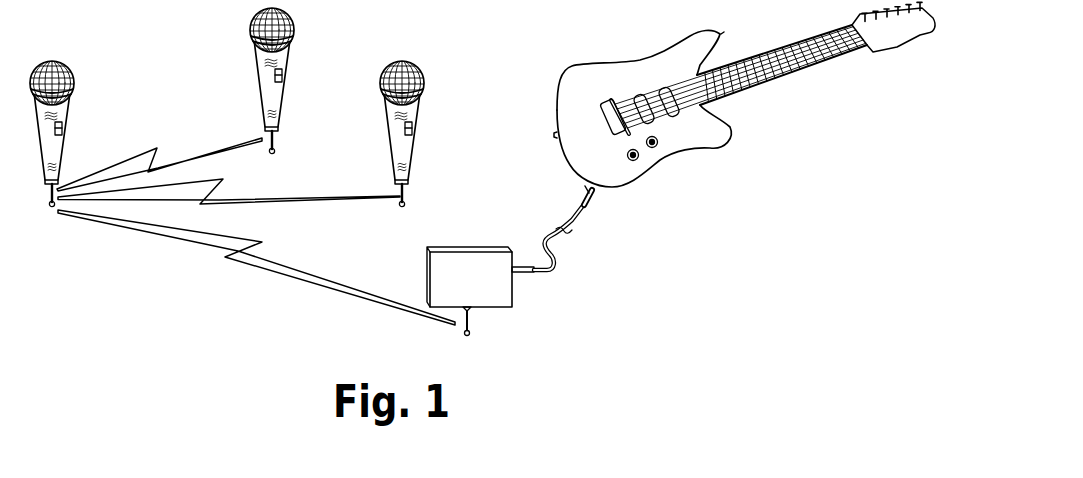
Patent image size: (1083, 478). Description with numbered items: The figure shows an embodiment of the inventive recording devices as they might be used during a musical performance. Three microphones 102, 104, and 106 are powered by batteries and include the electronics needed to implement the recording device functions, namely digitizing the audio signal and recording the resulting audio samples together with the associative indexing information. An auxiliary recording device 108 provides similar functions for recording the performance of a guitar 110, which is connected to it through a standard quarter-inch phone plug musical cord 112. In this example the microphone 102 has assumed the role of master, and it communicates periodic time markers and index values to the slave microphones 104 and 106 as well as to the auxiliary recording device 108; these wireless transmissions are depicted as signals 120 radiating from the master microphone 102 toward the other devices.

The microphone 102 is at (68, 137).
The microphone 104 is at (252, 78).
The microphone 106 is at (385, 152).
The auxiliary recording device 108 is at (447, 246).
The guitar 110 is at (556, 94).
The musical cord 112 is at (553, 274).
The wireless signal 120 is at (178, 160).